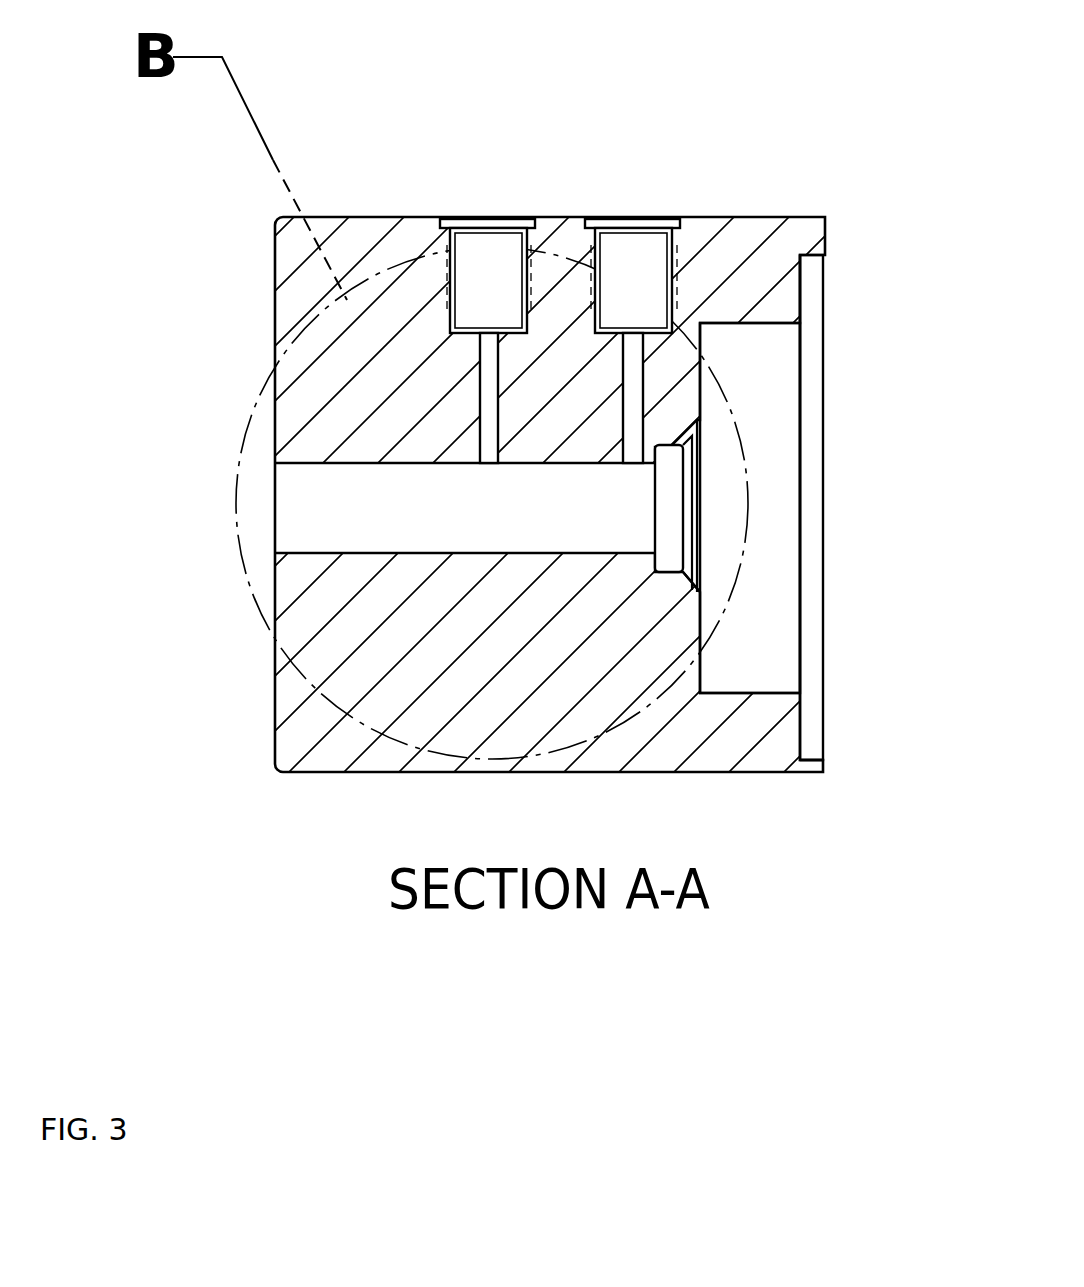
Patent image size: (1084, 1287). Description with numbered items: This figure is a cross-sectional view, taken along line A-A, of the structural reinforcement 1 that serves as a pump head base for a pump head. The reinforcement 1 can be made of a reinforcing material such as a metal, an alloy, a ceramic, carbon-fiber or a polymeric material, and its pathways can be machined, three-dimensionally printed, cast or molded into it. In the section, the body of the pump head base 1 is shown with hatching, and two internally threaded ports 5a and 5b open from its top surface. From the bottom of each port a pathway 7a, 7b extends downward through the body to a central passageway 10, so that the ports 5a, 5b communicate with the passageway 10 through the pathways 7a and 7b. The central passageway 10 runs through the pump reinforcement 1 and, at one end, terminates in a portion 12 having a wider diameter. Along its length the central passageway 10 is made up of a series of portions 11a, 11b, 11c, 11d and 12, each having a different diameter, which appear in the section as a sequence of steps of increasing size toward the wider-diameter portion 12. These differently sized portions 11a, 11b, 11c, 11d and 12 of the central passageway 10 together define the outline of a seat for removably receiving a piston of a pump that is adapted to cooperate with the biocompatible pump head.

The structural reinforcement 1 is at (181, 316).
The internally threaded port 5a is at (468, 245).
The internally threaded port 5b is at (635, 255).
The pathway 7a is at (490, 393).
The pathway 7b is at (643, 360).
The central passageway 10 is at (494, 522).
The portion of central passageway 11a is at (668, 558).
The portion of central passageway 11b is at (673, 573).
The portion of central passageway 11c is at (687, 557).
The portion of central passageway 11d is at (813, 587).
The wider-diameter portion 12 is at (758, 673).